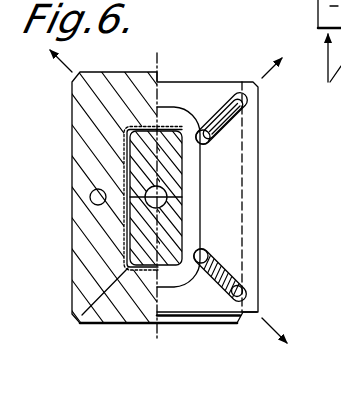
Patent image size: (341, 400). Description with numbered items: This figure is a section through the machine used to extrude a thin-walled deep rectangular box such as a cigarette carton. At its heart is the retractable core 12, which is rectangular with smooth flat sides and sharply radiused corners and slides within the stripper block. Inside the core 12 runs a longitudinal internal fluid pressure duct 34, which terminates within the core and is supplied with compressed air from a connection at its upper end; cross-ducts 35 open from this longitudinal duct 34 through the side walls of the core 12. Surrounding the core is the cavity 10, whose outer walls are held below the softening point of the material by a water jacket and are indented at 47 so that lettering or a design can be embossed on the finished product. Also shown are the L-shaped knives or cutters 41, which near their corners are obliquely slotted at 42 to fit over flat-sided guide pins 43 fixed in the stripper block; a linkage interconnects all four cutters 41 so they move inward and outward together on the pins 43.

The cavity 10 is at (143, 121).
The retractable core 12 is at (179, 174).
The longitudinal internal fluid pressure duct 34 is at (151, 203).
The cross-duct 35 is at (127, 178).
The L-shaped knife or cutter 41 is at (250, 127).
The oblique slot 42 is at (236, 97).
The guide pin 43 is at (218, 114).
The indentation 47 is at (123, 159).